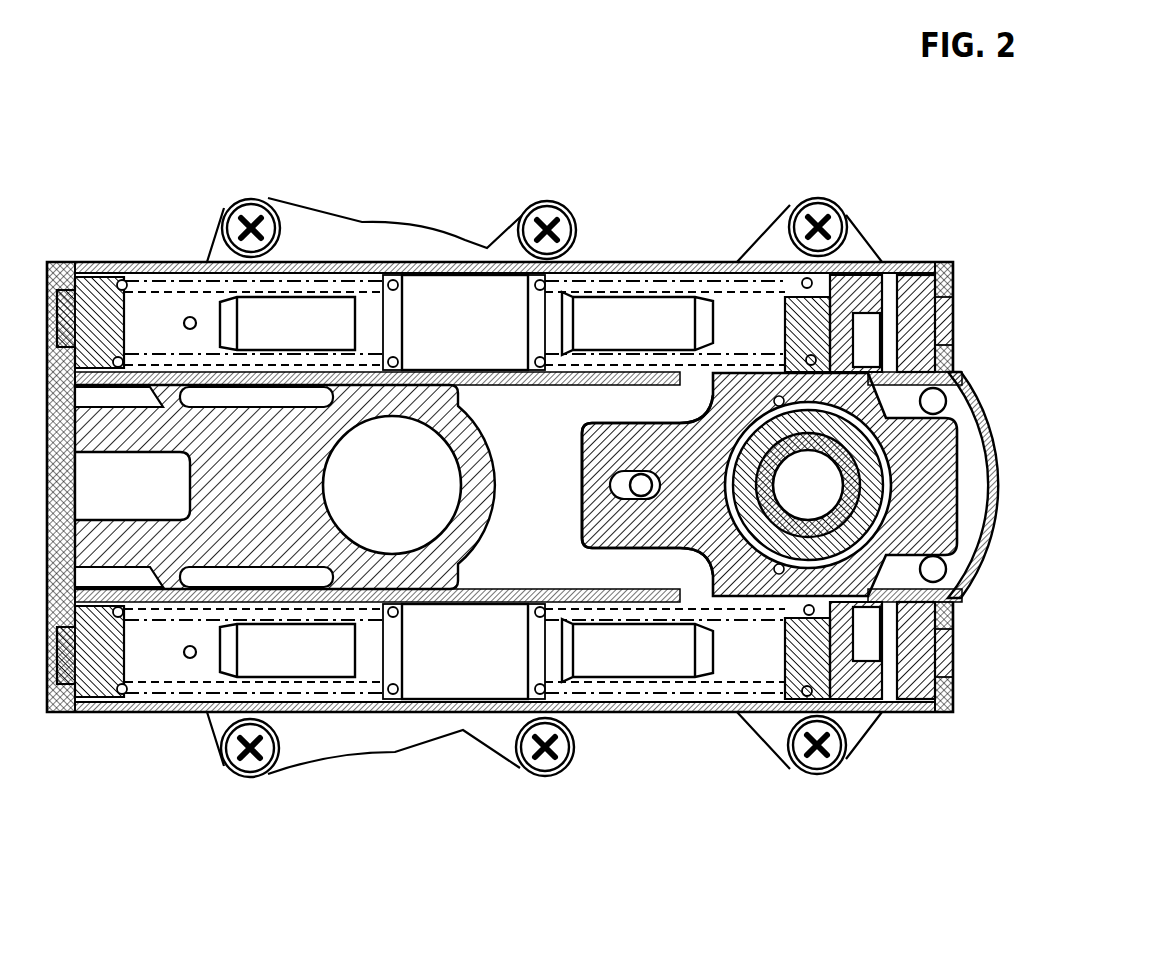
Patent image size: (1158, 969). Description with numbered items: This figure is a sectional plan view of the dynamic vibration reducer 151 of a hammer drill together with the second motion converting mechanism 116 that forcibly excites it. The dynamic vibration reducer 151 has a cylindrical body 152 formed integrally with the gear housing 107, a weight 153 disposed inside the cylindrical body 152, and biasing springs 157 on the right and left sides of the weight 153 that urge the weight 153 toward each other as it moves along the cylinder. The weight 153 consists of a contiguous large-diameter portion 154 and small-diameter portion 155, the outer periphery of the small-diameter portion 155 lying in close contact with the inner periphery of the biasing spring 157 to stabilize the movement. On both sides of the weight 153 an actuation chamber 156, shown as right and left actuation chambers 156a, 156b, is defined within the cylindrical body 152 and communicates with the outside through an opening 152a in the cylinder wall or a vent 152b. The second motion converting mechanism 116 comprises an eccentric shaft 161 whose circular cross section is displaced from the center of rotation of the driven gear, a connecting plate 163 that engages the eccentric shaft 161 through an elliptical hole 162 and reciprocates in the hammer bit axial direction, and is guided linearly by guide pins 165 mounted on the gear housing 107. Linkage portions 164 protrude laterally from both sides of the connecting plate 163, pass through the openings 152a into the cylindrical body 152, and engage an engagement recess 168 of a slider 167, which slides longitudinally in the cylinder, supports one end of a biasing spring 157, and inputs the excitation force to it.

The gear housing 107 is at (1002, 429).
The second motion converting mechanism 116 is at (972, 477).
The dynamic vibration reducer 151 is at (410, 255).
The cylindrical body 152 is at (607, 262).
The opening 152a is at (867, 327).
The vent 152b is at (190, 316).
The weight 153 is at (445, 285).
The large-diameter portion 154 is at (402, 262).
The small-diameter portion 155 is at (272, 305).
The actuation chamber 156 is at (426, 478).
The right actuation chamber 156a is at (727, 308).
The left actuation chamber 156b is at (150, 297).
The biasing spring 157 is at (120, 283).
The eccentric shaft 161 is at (873, 503).
The elliptical hole 162 is at (779, 400).
The connecting plate 163 is at (637, 423).
The linkage portion 164 is at (885, 262).
The guide pin 165 is at (945, 400).
The slider 167 is at (850, 275).
The engagement recess 168 is at (950, 300).